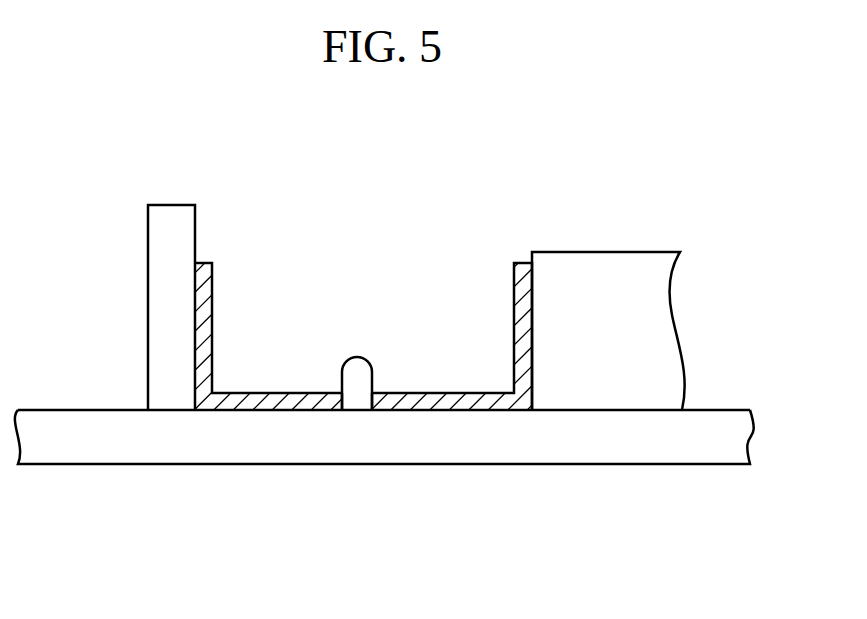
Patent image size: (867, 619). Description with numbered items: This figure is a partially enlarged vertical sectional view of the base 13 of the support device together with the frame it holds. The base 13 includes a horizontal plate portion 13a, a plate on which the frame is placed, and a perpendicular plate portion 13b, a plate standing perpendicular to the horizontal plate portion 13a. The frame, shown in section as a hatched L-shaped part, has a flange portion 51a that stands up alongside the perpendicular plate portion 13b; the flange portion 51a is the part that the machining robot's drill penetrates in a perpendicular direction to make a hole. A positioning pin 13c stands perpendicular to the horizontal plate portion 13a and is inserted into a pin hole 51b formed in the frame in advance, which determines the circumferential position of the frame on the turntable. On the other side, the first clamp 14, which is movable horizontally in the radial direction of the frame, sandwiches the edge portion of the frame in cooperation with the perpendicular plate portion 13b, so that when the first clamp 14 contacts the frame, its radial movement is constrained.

The base 13 is at (421, 485).
The horizontal plate portion 13a is at (540, 465).
The perpendicular plate portion 13b is at (148, 246).
The positioning pin 13c is at (356, 358).
The first clamp 14 is at (594, 262).
The flange portion 51a is at (213, 290).
The pin hole 51b is at (348, 402).